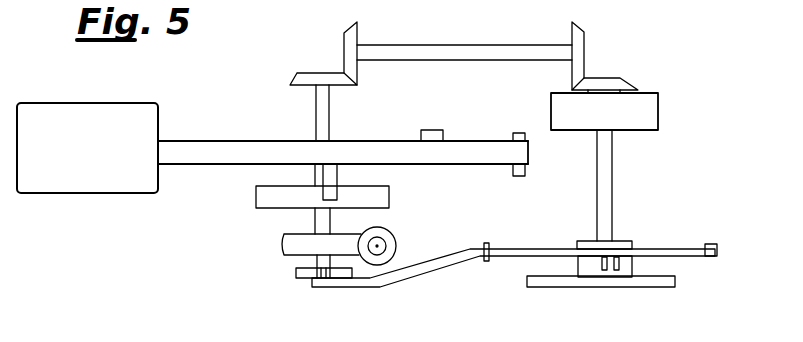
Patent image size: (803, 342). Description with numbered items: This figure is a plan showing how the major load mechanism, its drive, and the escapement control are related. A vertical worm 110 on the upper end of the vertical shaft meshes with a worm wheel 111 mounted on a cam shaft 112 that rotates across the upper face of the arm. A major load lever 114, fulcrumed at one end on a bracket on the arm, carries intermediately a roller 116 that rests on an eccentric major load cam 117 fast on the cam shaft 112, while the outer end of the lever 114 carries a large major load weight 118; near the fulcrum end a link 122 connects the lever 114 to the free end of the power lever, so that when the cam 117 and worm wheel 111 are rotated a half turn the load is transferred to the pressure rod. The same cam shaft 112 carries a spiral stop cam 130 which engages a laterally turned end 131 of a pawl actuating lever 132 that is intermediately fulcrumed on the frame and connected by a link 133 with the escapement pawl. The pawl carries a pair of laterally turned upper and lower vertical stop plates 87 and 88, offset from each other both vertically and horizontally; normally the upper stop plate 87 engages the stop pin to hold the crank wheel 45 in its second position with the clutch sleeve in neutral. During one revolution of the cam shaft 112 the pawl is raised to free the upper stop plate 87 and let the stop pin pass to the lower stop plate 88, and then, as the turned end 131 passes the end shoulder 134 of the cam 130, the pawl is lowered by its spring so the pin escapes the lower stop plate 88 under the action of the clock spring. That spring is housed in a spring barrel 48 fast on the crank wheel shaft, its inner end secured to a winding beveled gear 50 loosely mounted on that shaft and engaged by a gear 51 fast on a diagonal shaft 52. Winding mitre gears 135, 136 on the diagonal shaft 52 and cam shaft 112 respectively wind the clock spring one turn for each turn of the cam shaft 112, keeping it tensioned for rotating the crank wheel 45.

The major load weight 118 is at (87, 148).
The major load lever 114 is at (205, 146).
The link 122 is at (436, 130).
The cam shaft 112 is at (331, 108).
The winding mitre gear 136 is at (303, 73).
The winding mitre gear 135 is at (356, 32).
The diagonal shaft 52 is at (435, 50).
The gear 51 is at (582, 48).
The winding beveled gear 50 is at (625, 83).
The spring barrel 48 is at (648, 110).
The roller 116 is at (340, 178).
The major load cam 117 is at (390, 192).
The worm wheel 111 is at (284, 247).
The vertical worm 110 is at (393, 240).
The spiral stop cam 130 is at (296, 273).
The laterally turned end 131 is at (316, 276).
The end shoulder 134 is at (356, 272).
The pawl actuating lever 132 is at (664, 254).
The link 133 is at (711, 244).
The upper stop plate 87 is at (598, 262).
The lower stop plate 88 is at (628, 262).
The crank wheel 45 is at (622, 288).